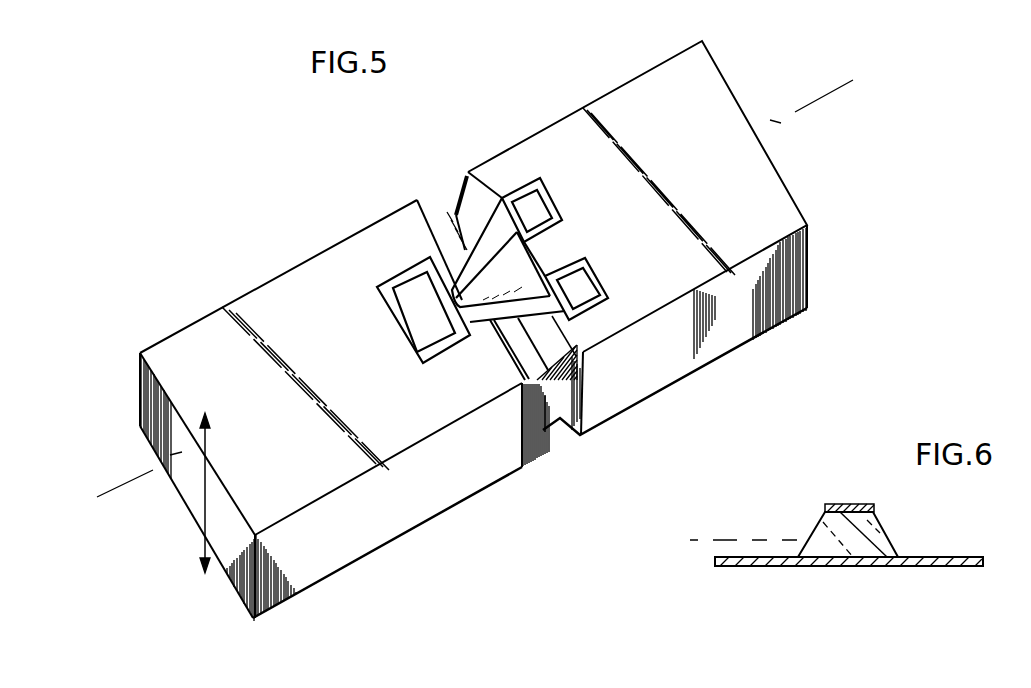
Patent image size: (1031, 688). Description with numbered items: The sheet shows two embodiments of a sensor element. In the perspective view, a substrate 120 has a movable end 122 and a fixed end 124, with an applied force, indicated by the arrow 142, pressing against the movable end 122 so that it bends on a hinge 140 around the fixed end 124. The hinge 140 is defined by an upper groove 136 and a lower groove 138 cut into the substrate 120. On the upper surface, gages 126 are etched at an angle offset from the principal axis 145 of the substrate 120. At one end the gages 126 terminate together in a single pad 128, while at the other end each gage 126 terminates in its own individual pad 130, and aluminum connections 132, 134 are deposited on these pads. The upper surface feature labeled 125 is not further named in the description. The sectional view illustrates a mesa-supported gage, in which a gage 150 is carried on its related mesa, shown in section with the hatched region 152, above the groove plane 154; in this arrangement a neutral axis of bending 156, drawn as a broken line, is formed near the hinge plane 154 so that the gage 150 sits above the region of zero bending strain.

In FIG. 5, the substrate 120 is at (478, 474).
In FIG. 5, the movable end 122 is at (320, 553).
In FIG. 5, the fixed end 124 is at (683, 340).
In FIG. 5, the first block 125 is at (200, 337).
In FIG. 5, the gages 126 is at (475, 245).
In FIG. 5, the single pad 128 is at (393, 285).
In FIG. 5, the individual pads 130 is at (585, 258).
In FIG. 5, the aluminum connection 132 is at (422, 327).
In FIG. 5, the aluminum connection 134 is at (570, 290).
In FIG. 5, the upper groove 136 is at (537, 362).
In FIG. 5, the lower groove 138 is at (547, 433).
In FIG. 5, the hinge 140 is at (565, 402).
In FIG. 5, the arrow 142 is at (202, 490).
In FIG. 5, the principal axis 145 is at (795, 112).
In FIG. 6, the gage 150 is at (835, 504).
In FIG. 6, the contact bump 152 is at (878, 524).
In FIG. 6, the groove plane 154 is at (966, 557).
In FIG. 6, the neutral axis of bending 156 is at (757, 540).